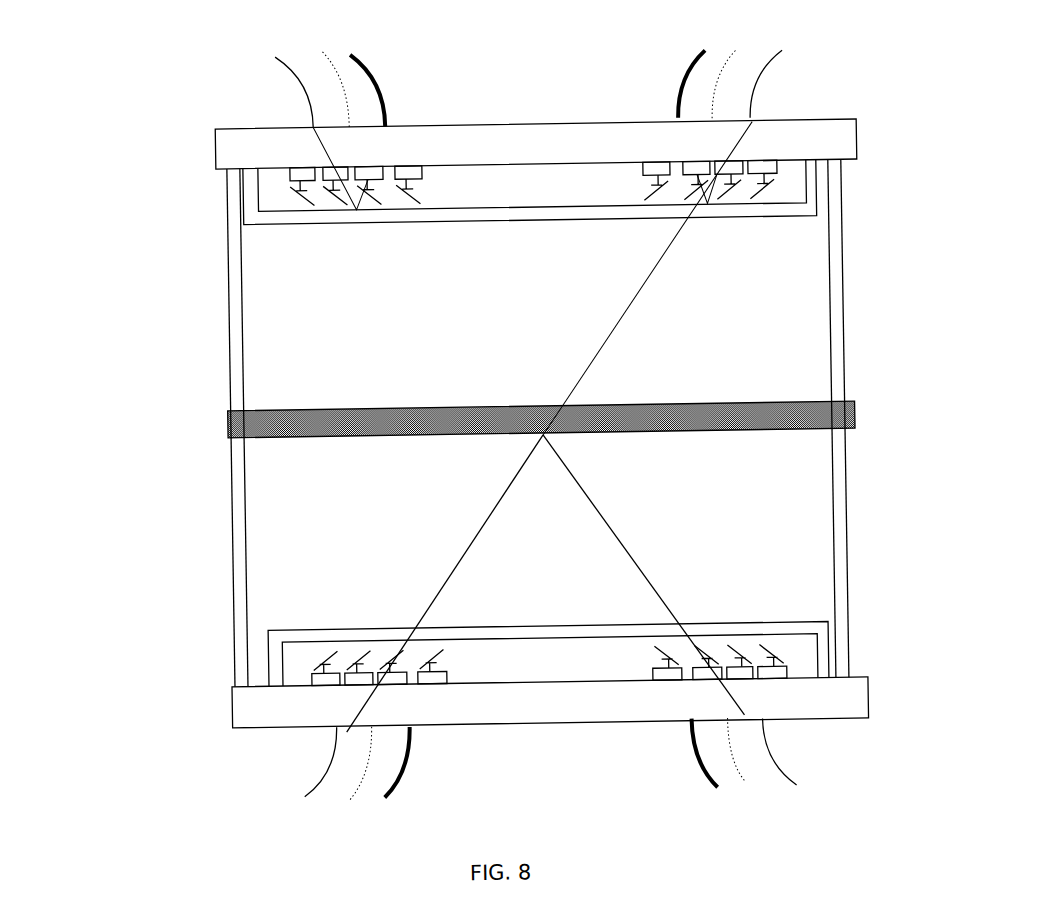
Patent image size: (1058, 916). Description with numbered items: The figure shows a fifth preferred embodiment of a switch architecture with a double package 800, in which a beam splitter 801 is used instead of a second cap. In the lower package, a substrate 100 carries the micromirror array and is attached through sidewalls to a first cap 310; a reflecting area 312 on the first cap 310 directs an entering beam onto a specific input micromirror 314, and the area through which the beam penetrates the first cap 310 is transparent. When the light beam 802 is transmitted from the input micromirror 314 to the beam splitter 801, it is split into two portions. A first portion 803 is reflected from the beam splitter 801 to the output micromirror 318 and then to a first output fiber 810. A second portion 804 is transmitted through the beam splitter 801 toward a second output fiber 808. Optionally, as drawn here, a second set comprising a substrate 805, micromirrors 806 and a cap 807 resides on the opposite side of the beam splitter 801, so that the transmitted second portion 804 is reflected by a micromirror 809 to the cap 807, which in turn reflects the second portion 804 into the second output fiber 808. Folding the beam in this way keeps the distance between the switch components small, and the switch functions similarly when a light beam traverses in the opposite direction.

The switch architecture with a double package 800 is at (110, 130).
The second substrate 805 is at (863, 140).
The second micromirrors 806 is at (781, 171).
The second cap 807 is at (820, 216).
The second output fiber 808 is at (763, 85).
The micromirror 809 is at (709, 180).
The second portion 804 is at (604, 339).
The beam splitter 801 is at (853, 412).
The light beam 802 is at (468, 544).
The first portion 803 is at (620, 542).
The reflecting area 312 is at (231, 481).
The first cap 310 is at (265, 634).
The input micromirror 314 is at (381, 668).
The output micromirror 318 is at (711, 663).
The substrate 100 is at (228, 700).
The first output fiber 810 is at (758, 751).